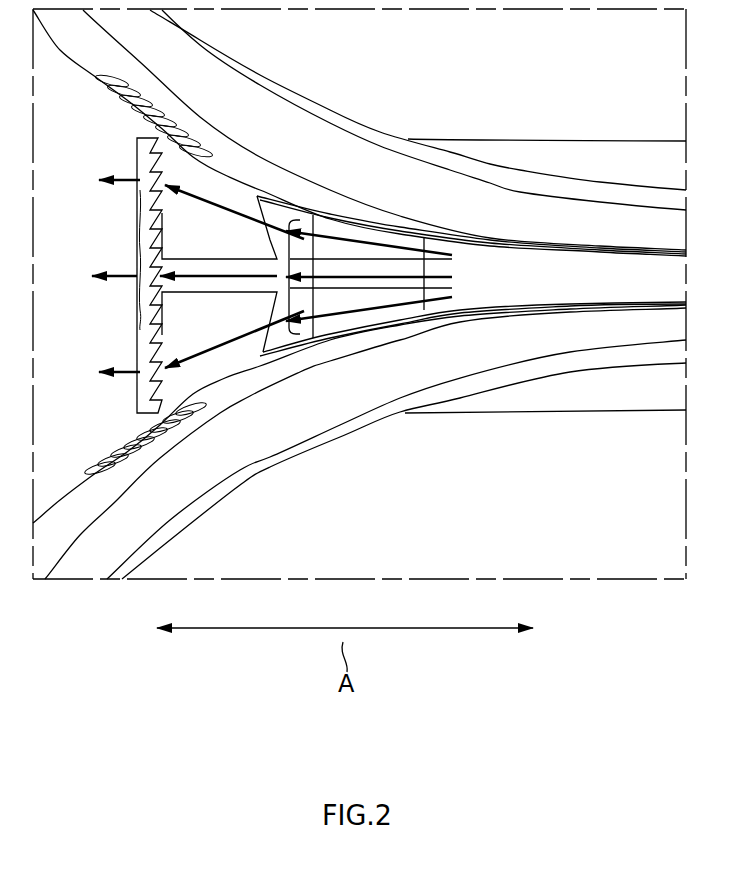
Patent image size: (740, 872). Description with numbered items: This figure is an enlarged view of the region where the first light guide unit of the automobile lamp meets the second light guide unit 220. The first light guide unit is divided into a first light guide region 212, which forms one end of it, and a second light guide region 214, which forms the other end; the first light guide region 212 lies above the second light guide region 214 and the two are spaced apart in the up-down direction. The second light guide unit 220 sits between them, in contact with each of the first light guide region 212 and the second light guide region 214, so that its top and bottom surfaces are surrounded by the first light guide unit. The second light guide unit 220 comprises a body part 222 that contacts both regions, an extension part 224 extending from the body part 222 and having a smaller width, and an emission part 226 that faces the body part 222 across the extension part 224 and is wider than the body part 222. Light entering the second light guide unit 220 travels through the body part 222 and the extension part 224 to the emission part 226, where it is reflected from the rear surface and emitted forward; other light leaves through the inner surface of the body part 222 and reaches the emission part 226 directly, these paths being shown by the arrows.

The first light guide region 212 is at (243, 93).
The second light guide region 214 is at (205, 478).
The second light guide unit 220 is at (596, 477).
The body part 222 is at (498, 265).
The extension part 224 is at (193, 283).
The emission part 226 is at (136, 320).